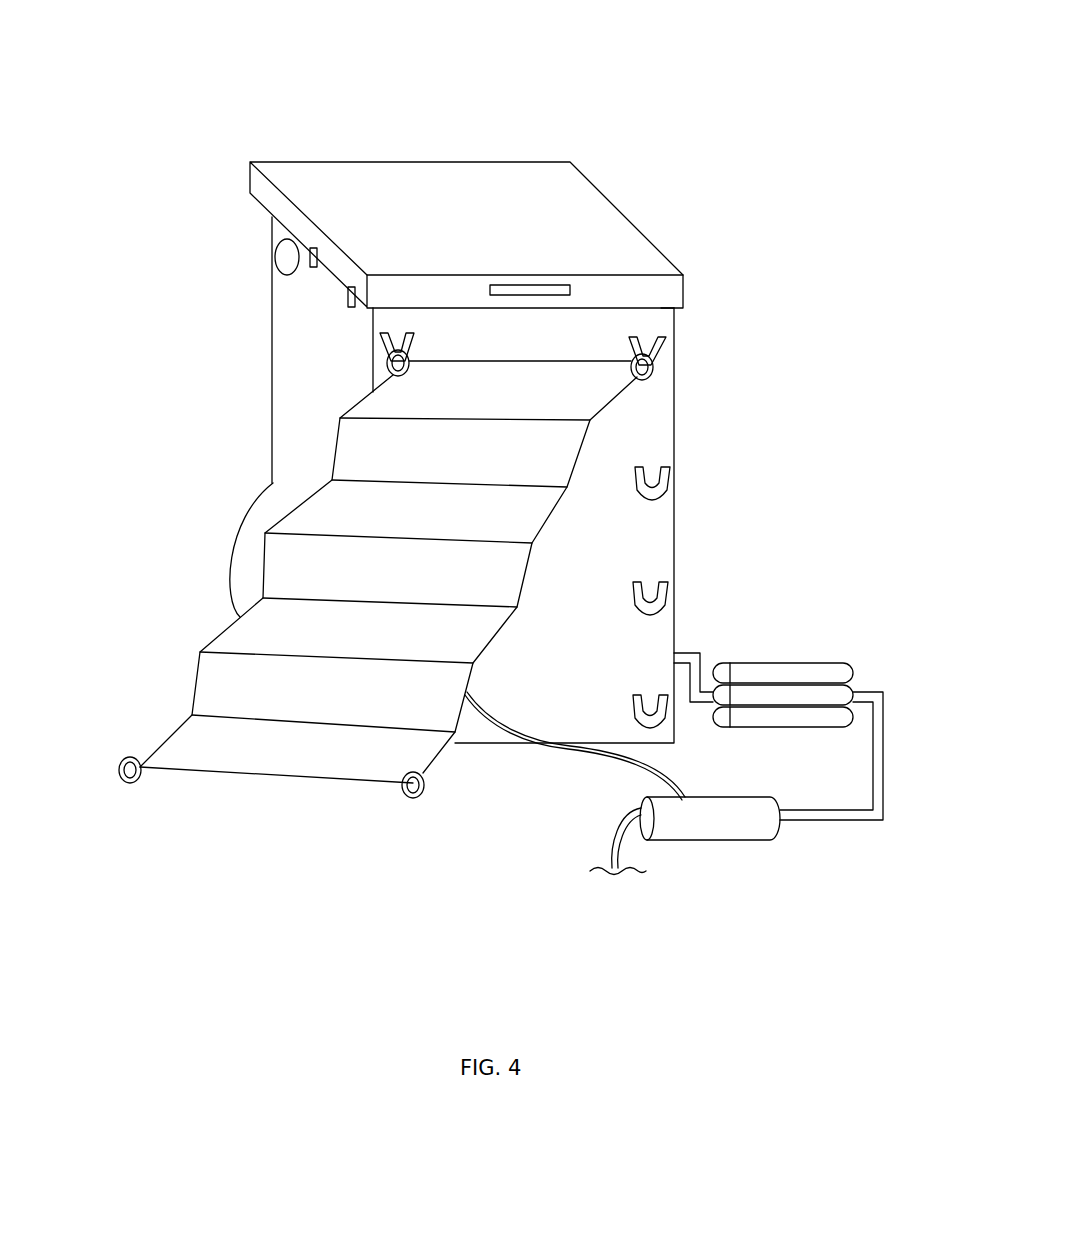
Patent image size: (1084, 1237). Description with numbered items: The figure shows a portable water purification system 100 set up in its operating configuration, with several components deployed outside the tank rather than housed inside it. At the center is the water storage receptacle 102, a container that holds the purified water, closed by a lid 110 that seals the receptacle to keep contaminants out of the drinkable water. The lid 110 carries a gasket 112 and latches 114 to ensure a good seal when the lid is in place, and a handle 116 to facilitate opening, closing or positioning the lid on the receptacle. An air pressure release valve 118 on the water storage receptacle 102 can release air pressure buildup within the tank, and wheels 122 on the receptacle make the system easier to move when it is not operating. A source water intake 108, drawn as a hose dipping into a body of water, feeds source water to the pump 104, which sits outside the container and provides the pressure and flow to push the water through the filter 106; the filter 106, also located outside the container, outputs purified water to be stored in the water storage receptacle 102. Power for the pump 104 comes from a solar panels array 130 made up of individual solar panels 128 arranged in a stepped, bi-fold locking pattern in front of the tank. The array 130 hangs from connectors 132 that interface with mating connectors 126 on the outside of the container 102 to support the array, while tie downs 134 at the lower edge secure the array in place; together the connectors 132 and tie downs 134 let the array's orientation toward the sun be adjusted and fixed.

The portable water purification system 100 is at (770, 60).
The water storage receptacle 102 is at (300, 447).
The pump 104 is at (742, 840).
The filter 106 is at (597, 330).
The source water intake 108 is at (625, 853).
The lid 110 is at (335, 173).
The gasket 112 is at (660, 310).
The latches 114 is at (362, 265).
The handle 116 is at (532, 263).
The air pressure release valve 118 is at (255, 237).
The wheels 122 is at (208, 597).
The connectors 126 is at (682, 368).
The solar panels 128 is at (273, 750).
The solar panels array 130 is at (316, 526).
The connectors 132 is at (386, 363).
The tie downs 134 is at (128, 784).